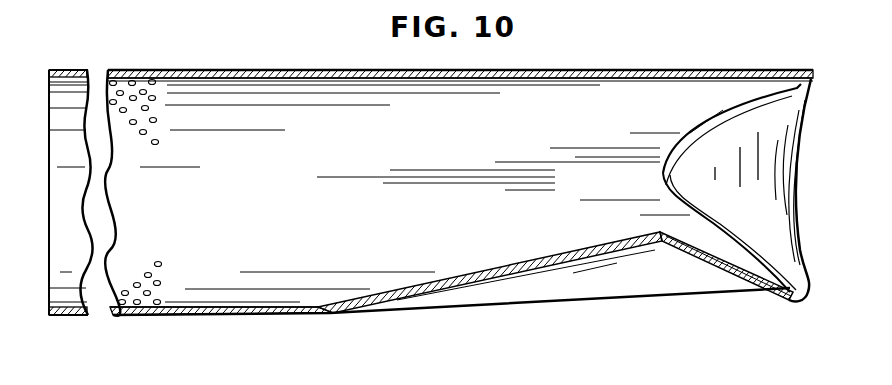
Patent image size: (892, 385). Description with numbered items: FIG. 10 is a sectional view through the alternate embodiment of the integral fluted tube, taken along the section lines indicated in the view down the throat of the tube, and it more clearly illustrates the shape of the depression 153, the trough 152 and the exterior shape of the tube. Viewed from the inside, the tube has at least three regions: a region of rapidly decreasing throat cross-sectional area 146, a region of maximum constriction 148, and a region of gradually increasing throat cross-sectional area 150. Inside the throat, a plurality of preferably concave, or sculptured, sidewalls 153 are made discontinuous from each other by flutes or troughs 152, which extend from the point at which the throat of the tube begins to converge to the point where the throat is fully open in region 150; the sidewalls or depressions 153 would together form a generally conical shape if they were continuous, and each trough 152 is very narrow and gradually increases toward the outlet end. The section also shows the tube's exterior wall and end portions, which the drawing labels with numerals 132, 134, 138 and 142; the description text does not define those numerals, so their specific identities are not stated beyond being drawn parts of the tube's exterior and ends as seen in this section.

The closed end of tube 132 is at (816, 70).
The tube body fragment 134 is at (47, 75).
The open end region with bubbles 138 is at (134, 101).
The bottom wall 142 is at (70, 318).
The region of rapidly decreasing throat cross-sectional area 146 is at (724, 282).
The region of maximum constriction 148 is at (650, 176).
The region of gradually increasing throat cross-sectional area 150 is at (443, 202).
The flute 152 is at (596, 84).
The sidewall 153 is at (752, 179).